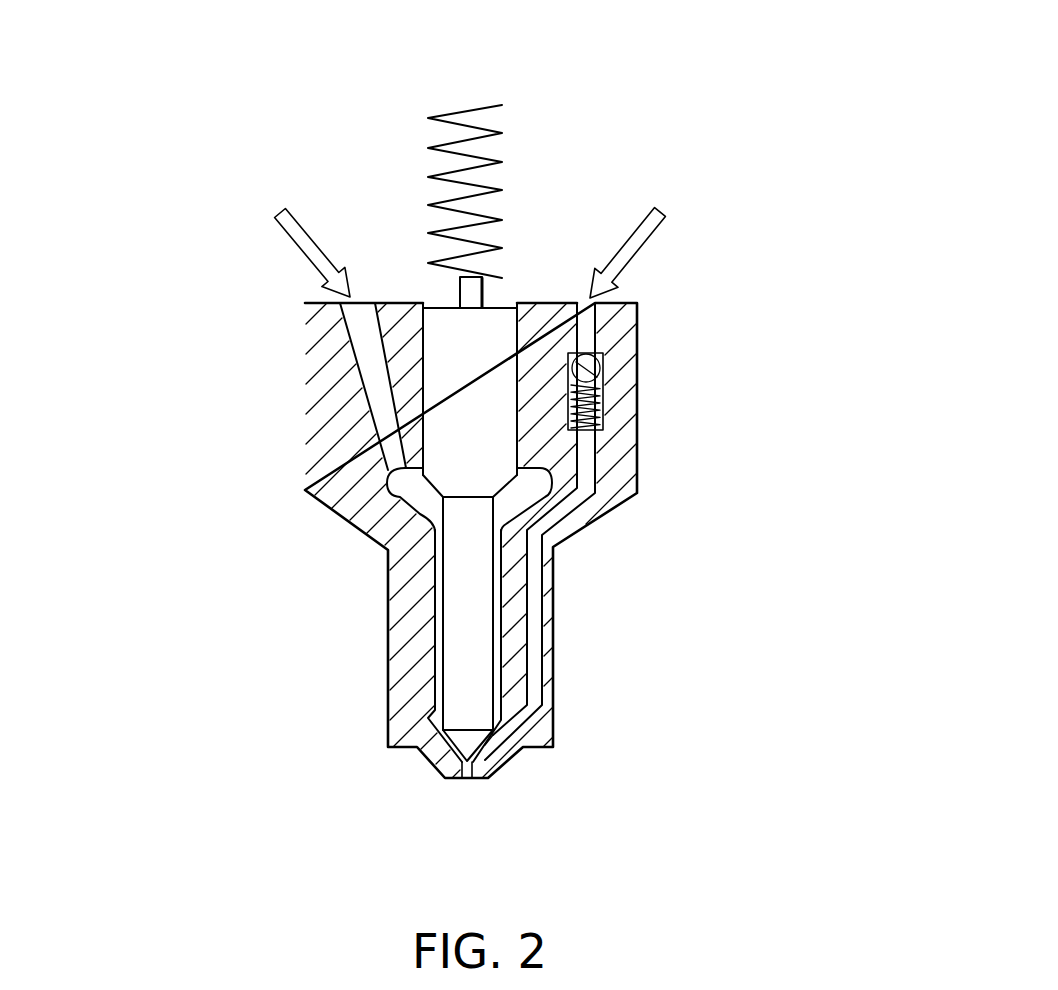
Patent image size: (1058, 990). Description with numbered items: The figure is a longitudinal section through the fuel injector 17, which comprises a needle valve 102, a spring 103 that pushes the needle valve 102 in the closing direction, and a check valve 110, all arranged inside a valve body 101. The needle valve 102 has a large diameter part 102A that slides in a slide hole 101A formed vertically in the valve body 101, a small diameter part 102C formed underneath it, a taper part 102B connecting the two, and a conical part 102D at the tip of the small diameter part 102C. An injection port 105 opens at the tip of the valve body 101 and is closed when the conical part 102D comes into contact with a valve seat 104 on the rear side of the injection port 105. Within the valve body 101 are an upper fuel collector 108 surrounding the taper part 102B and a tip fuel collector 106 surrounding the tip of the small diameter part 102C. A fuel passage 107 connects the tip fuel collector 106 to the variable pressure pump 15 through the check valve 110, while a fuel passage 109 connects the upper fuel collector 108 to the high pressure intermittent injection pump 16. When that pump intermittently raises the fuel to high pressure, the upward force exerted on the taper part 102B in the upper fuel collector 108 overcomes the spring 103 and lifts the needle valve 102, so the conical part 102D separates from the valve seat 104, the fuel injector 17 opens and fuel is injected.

The variable pressure pump 15 is at (749, 239).
The high pressure intermittent injection pump 16 is at (208, 237).
The fuel injector 17 is at (668, 532).
The valve body 101 is at (637, 455).
The slide hole 101A is at (435, 308).
The needle valve 102 is at (503, 308).
The large diameter part 102A is at (422, 418).
The taper part 102B is at (432, 502).
The small diameter part 102C is at (440, 682).
The conical part 102D is at (482, 752).
The spring 103 is at (461, 112).
The valve seat 104 is at (443, 750).
The injection port 105 is at (463, 782).
The tip fuel collector 106 is at (520, 733).
The fuel passage 107 is at (533, 600).
The upper fuel collector 108 is at (387, 493).
The fuel passage 109 is at (362, 382).
The check valve 110 is at (600, 367).